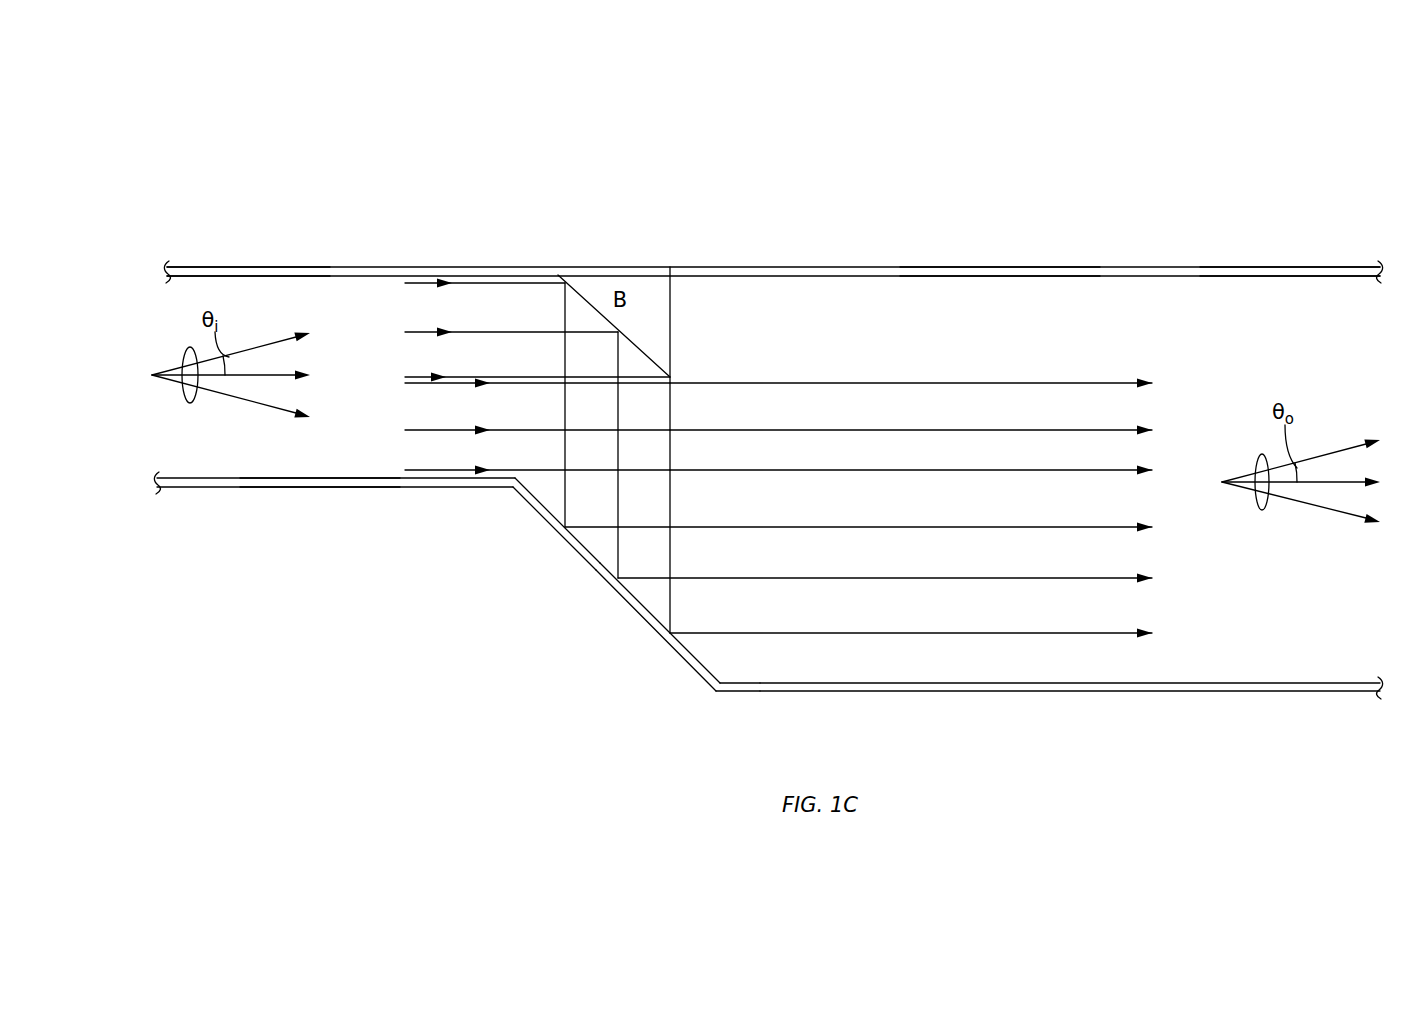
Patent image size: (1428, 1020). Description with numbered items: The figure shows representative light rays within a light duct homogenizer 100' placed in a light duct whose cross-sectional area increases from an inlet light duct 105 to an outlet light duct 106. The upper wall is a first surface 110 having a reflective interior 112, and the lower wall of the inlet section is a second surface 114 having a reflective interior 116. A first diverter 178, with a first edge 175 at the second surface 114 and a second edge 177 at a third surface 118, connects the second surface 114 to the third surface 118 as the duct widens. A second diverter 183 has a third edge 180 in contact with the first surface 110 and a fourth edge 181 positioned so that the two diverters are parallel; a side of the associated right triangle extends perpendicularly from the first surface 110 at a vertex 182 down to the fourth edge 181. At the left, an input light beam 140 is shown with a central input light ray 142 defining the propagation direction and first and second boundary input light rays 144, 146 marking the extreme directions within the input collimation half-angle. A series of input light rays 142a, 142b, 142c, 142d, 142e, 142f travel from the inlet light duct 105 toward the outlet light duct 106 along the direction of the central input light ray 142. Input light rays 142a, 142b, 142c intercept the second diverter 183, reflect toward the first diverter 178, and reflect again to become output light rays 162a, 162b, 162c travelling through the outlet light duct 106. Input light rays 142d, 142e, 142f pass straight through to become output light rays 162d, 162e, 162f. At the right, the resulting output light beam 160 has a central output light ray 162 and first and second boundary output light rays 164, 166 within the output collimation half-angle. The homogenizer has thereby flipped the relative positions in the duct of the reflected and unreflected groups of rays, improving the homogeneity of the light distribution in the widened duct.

The light duct homogenizer 100' is at (296, 115).
The inlet light duct 105 is at (221, 249).
The outlet light duct 106 is at (1246, 249).
The first surface 110 is at (305, 268).
The reflective interior 112 is at (960, 282).
The second surface 114 is at (212, 490).
The reflective interior 116 is at (288, 478).
The third surface 118 is at (1010, 692).
The input light beam 140 is at (185, 360).
The central input light ray 142 is at (279, 372).
The first boundary input light ray 144 is at (258, 346).
The second boundary input light ray 146 is at (234, 400).
The input light ray 142a is at (428, 282).
The input light ray 142b is at (425, 331).
The input light ray 142c is at (528, 376).
The input light ray 142d is at (418, 385).
The input light ray 142e is at (418, 432).
The input light ray 142f is at (422, 472).
The output light beam 160 is at (1257, 462).
The central output light ray 162 is at (1348, 480).
The first boundary output light ray 164 is at (1331, 452).
The second boundary output light ray 166 is at (1305, 504).
The output light ray 162a is at (975, 527).
The output light ray 162b is at (975, 578).
The output light ray 162c is at (975, 633).
The output light ray 162d is at (975, 383).
The output light ray 162e is at (975, 430).
The output light ray 162f is at (975, 470).
The first edge 175 is at (513, 488).
The second edge 177 is at (718, 692).
The first diverter 178 is at (607, 578).
The third edge 180 is at (560, 273).
The fourth edge 181 is at (675, 377).
The vertex 182 is at (670, 262).
The second diverter 183 is at (590, 302).